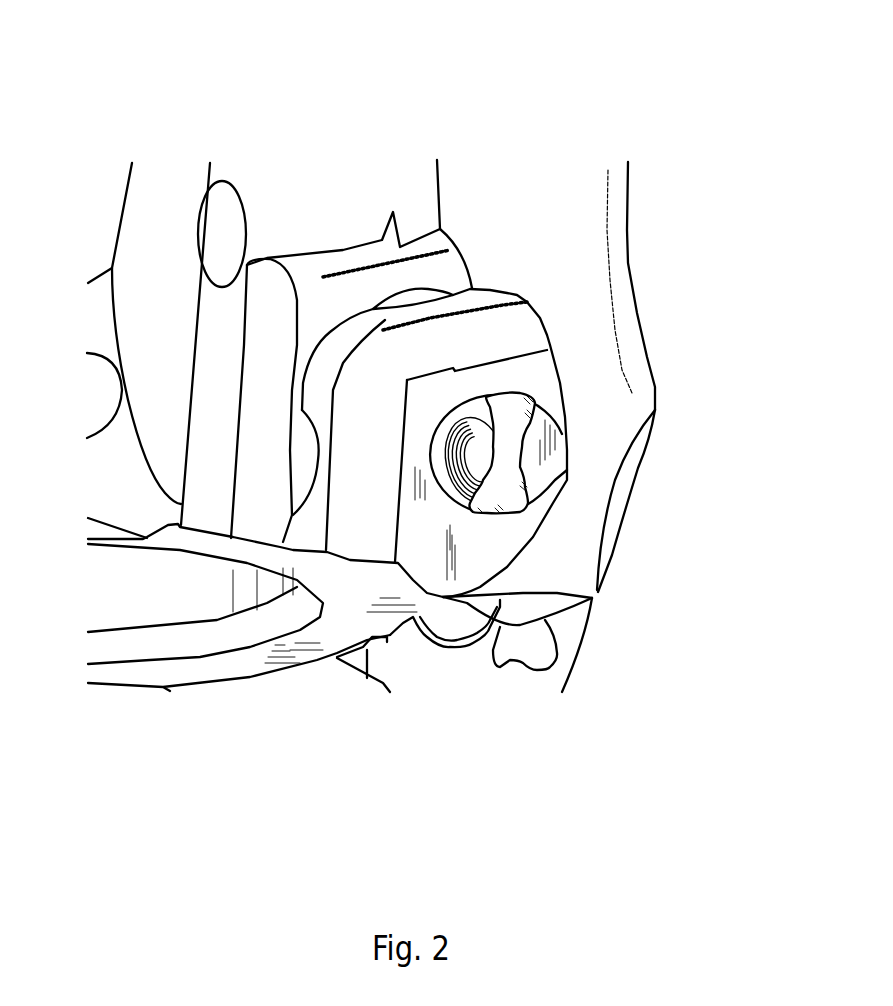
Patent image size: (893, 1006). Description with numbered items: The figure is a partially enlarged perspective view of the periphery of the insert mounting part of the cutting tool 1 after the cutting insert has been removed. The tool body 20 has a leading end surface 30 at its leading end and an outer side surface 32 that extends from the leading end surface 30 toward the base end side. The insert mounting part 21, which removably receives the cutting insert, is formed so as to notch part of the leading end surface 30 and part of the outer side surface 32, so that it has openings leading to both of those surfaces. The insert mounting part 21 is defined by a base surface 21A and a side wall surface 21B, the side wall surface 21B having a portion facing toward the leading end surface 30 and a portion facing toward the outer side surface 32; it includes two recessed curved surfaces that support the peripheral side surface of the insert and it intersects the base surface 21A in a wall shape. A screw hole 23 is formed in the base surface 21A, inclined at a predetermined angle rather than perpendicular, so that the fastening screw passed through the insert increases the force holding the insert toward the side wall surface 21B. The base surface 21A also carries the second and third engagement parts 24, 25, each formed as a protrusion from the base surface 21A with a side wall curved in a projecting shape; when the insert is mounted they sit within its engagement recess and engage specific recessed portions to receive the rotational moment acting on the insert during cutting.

The cutting tool 1 is at (290, 200).
The tool body 20 is at (332, 217).
The insert mounting part 21 is at (436, 520).
The base surface 21A is at (487, 547).
The side wall surface 21B is at (418, 297).
The screw hole 23 is at (445, 478).
The second engagement part 24 is at (537, 398).
The third engagement part 25 is at (533, 490).
The leading end surface 30 is at (518, 605).
The outer side surface 32 is at (577, 537).